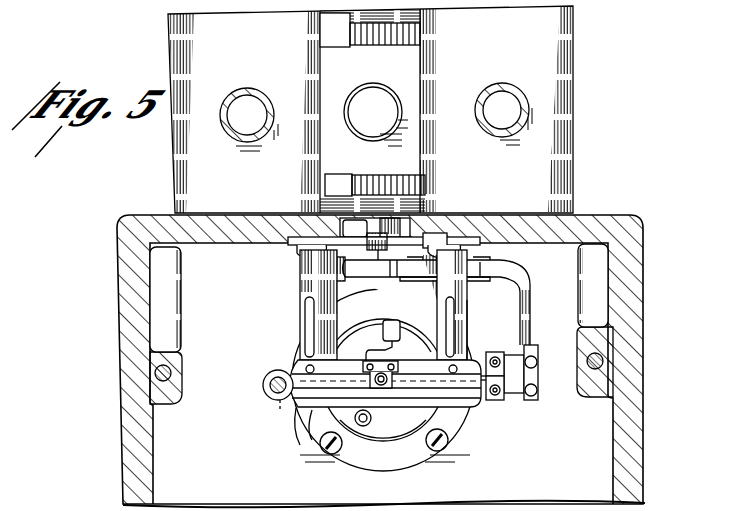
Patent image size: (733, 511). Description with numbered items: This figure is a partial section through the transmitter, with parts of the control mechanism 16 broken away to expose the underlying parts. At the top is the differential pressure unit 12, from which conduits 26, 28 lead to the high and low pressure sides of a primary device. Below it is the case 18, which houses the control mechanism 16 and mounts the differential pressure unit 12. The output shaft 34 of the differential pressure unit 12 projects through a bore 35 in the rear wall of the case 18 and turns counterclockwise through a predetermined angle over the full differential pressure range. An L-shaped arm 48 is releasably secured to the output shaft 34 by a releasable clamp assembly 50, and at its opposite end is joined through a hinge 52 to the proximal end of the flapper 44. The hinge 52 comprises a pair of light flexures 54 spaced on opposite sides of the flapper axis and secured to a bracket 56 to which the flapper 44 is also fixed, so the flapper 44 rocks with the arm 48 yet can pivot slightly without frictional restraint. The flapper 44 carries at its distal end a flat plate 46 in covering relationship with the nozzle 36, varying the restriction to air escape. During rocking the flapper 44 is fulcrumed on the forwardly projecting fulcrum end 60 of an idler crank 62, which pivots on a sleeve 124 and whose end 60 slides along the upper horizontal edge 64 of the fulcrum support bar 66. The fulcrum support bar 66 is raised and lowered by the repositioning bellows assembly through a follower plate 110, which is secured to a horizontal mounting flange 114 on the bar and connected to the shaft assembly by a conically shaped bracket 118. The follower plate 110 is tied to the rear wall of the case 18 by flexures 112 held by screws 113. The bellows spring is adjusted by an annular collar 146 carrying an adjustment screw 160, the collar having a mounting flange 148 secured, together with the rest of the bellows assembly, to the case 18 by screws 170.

The differential pressure unit 12 is at (577, 110).
The conduit 26 is at (256, 136).
The conduit 28 is at (512, 134).
The bore 35 is at (420, 213).
The flexures 112 is at (296, 252).
The screws 113 is at (298, 262).
The L-shaped arm 48 is at (520, 260).
The follower plate 110 is at (478, 290).
The releasable clamp assembly 50 is at (318, 305).
The light flexures 54 is at (510, 353).
The horizontal mounting flange 114 is at (486, 350).
The case 18 is at (645, 335).
The output shaft 34 is at (388, 289).
The annular collar 146 is at (390, 438).
The screws 170 is at (446, 446).
The mounting flange 148 is at (440, 460).
The adjustment screw 160 is at (360, 427).
The flapper 44 is at (324, 368).
The conically shaped bracket 118 is at (400, 372).
The fulcrum end 60 is at (385, 389).
The idler crank 62 is at (372, 350).
The sleeve 124 is at (400, 328).
The flat plate 46 is at (266, 395).
The nozzle 36 is at (280, 410).
The upper horizontal edge 64 is at (300, 445).
The fulcrum support bar 66 is at (312, 440).
The hinge 52 is at (515, 401).
The bracket 56 is at (496, 402).
The control mechanism 16 is at (272, 327).